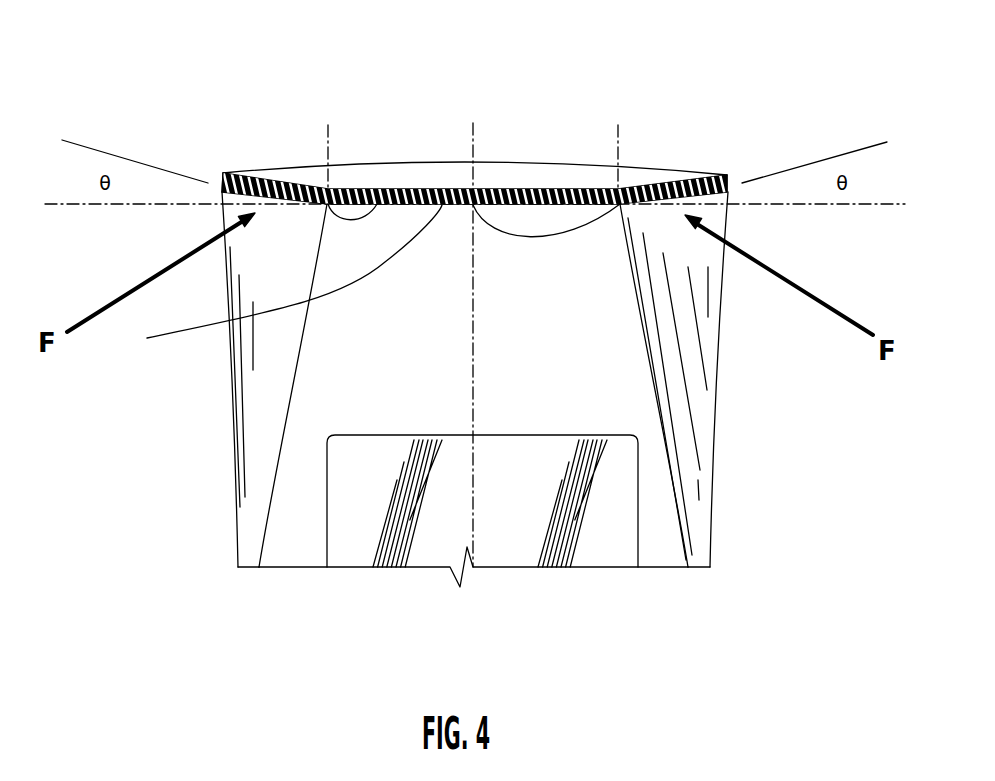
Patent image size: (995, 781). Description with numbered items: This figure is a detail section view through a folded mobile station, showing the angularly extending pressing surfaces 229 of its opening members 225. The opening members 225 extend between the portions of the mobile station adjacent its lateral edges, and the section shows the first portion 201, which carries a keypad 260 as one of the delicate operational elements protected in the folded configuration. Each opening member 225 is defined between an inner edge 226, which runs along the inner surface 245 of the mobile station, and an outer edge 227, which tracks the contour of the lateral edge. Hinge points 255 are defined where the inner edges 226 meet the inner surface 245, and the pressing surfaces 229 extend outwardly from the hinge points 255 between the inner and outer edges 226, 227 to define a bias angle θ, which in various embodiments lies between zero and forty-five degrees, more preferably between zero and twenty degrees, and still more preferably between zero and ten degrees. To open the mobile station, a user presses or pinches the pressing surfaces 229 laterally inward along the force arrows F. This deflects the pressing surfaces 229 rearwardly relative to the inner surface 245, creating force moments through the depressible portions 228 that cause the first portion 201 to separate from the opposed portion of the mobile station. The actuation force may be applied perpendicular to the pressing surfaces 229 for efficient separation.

The first portion 201 is at (660, 567).
The opening member 225 is at (245, 555).
The inner edge 226 is at (258, 567).
The outer edge 227 is at (240, 567).
The depressible portion 228 is at (255, 382).
The pressing surface 229 is at (222, 198).
The inner surface 245 is at (383, 345).
The hinge point 255 is at (380, 204).
The keypad 260 is at (593, 552).